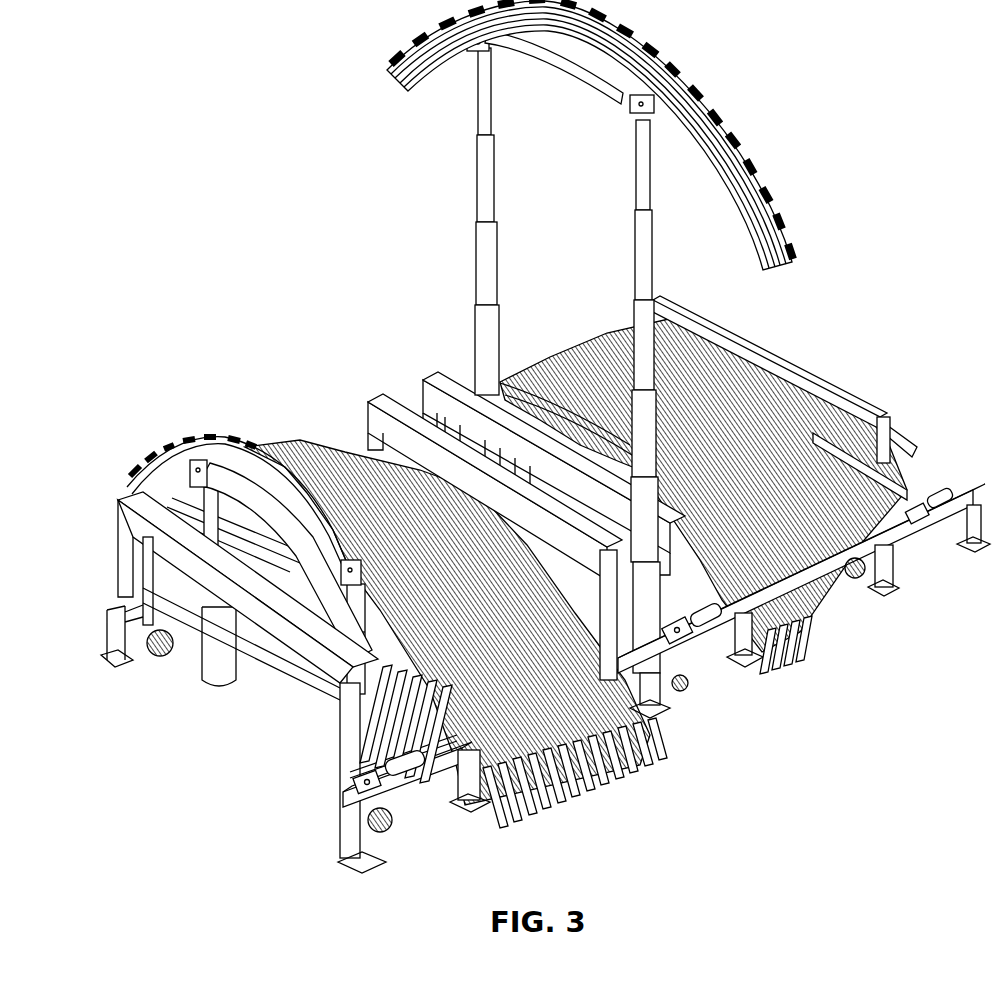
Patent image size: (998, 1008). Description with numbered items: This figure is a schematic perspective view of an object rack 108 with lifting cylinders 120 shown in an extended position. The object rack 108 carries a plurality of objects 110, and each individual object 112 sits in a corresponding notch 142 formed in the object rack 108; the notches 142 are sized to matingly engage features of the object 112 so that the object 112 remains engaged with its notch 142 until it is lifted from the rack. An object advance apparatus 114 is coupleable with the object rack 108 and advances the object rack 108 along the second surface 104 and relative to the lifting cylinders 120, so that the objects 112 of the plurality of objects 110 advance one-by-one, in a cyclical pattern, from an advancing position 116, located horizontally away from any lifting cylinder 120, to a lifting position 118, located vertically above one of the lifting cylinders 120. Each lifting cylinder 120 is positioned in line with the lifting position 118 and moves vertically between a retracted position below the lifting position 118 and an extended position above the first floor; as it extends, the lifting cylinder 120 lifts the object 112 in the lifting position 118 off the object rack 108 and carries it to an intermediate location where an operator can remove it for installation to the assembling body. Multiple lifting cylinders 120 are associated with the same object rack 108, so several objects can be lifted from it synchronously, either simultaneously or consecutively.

The second surface 104 is at (258, 828).
The object rack 108 is at (660, 306).
The plurality of objects 110 is at (567, 368).
The object 112 is at (757, 171).
The object advance apparatus 114 is at (420, 774).
The advancing position 116 is at (522, 836).
The lifting position 118 is at (432, 768).
The lifting cylinder 120 is at (484, 177).
The notch 142 is at (878, 542).